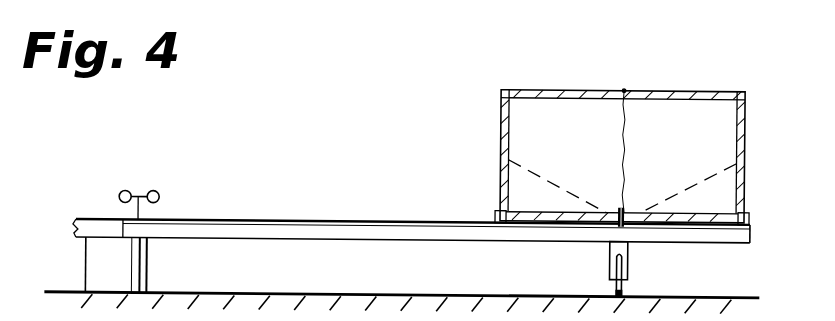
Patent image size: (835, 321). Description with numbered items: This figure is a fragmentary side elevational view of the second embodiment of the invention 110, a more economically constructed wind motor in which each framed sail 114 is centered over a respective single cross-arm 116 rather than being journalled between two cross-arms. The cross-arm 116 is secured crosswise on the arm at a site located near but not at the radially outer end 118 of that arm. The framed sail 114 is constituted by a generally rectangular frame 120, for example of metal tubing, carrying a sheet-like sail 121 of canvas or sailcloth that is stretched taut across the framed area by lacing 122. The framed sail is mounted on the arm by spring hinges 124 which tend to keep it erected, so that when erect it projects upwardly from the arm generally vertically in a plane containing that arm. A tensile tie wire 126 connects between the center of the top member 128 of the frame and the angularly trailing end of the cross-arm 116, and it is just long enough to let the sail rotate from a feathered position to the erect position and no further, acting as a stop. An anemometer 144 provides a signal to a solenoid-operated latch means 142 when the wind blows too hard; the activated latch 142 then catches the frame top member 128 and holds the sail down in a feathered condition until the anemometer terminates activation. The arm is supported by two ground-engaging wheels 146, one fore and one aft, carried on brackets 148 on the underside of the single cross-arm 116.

The second embodiment of the invention 110 is at (329, 176).
The framed sail 114 is at (652, 134).
The cross-arm 116 is at (613, 227).
The radially outer end 118 is at (751, 232).
The frame 120 is at (643, 87).
The sheet-like sail 121 is at (712, 122).
The lacing 122 is at (745, 138).
The spring hinges 124 is at (496, 212).
The tensile tie wire 126 is at (623, 130).
The top member 128 is at (557, 86).
The latch means 142 is at (628, 222).
The anemometer 144 is at (160, 186).
The ground-engaging wheels 146 is at (630, 282).
The brackets 148 is at (608, 252).